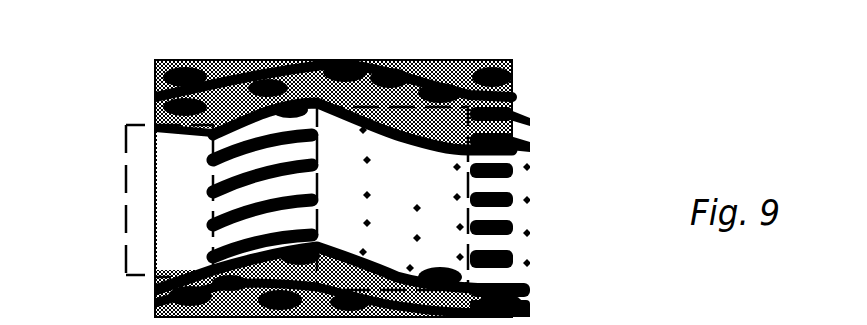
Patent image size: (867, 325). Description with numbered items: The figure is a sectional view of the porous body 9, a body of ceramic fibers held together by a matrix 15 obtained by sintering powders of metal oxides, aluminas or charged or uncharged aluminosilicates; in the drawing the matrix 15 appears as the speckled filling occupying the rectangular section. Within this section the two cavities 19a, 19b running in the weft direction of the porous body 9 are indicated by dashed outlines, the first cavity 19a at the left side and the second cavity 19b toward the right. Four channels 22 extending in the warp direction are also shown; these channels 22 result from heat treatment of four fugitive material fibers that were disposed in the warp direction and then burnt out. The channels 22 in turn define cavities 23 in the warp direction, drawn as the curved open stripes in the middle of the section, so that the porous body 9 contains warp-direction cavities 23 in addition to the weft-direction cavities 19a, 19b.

The porous body 9 is at (326, 171).
The matrix 15 is at (437, 73).
The cavity 19a is at (123, 262).
The cavity 19b is at (512, 95).
The channel 22 is at (520, 273).
The cavity 23 is at (160, 258).